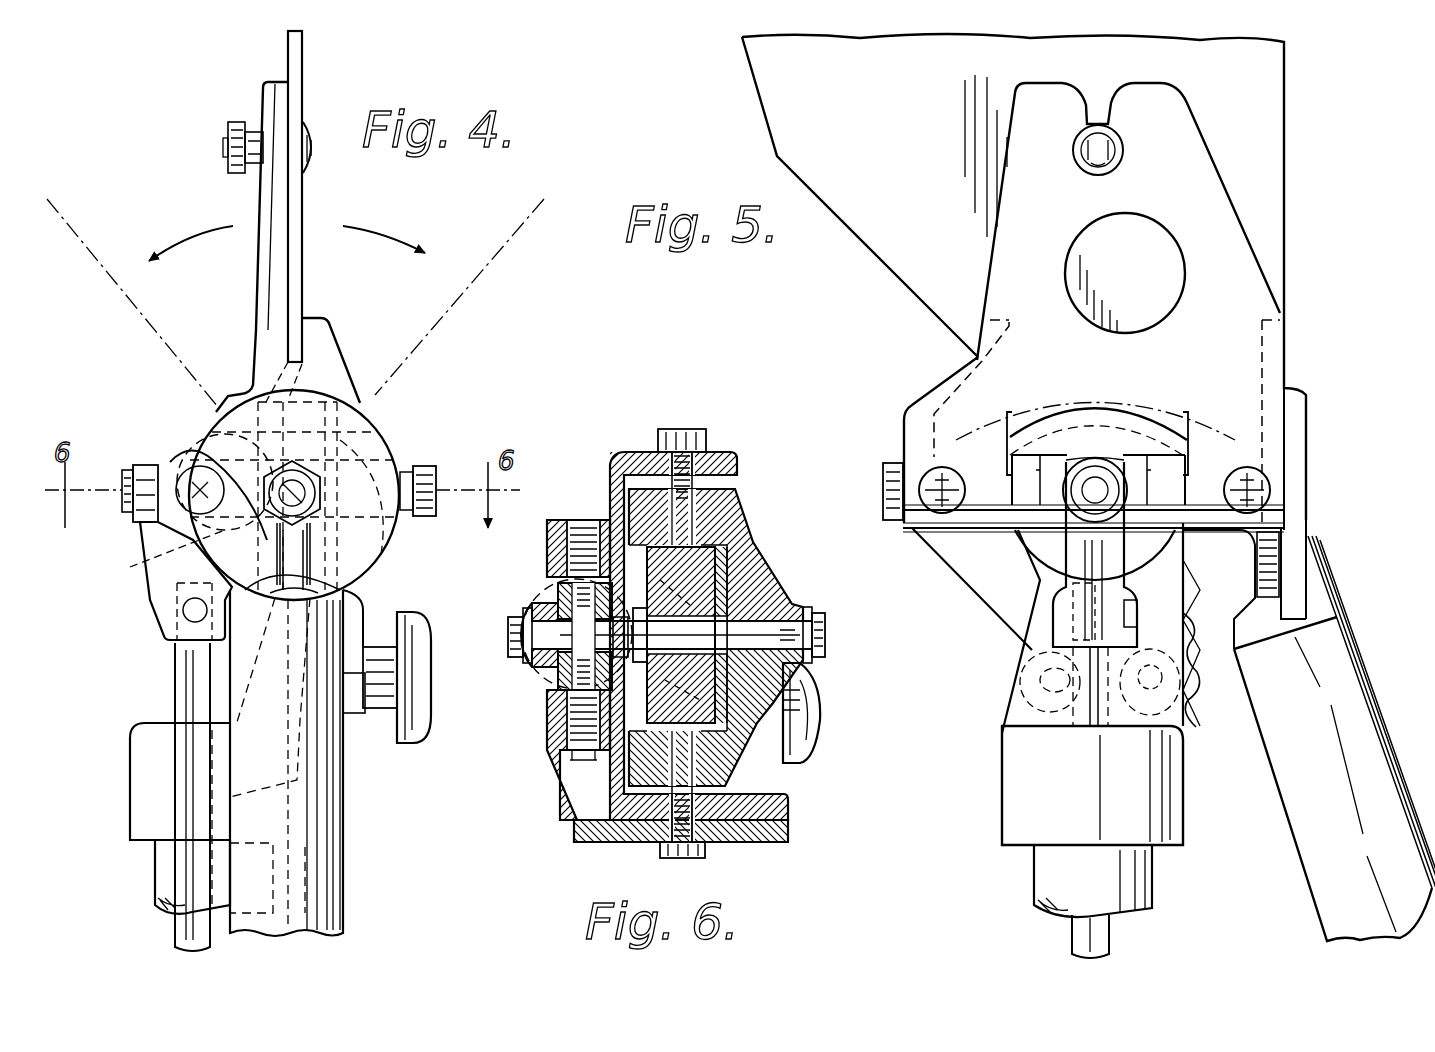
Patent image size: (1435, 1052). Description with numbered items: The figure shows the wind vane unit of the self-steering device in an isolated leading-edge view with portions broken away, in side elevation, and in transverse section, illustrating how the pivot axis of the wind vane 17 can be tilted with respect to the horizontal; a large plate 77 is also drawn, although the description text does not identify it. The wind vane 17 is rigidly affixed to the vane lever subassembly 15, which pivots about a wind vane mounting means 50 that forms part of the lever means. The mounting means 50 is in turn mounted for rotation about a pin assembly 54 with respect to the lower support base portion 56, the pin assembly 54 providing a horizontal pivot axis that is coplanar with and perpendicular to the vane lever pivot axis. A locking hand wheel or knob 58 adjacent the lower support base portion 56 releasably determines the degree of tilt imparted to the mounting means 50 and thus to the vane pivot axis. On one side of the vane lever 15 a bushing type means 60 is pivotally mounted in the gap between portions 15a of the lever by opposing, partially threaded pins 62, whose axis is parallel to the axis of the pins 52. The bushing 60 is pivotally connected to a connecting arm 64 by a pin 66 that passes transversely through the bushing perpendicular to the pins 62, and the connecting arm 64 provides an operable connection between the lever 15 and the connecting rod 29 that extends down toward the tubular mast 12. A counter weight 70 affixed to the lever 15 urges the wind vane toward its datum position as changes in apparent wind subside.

In FIG. 4, the tubular mast 12 is at (158, 880).
In FIG. 5, the tubular mast 12 is at (1155, 878).
In FIG. 4, the vane lever subassembly 15 is at (325, 352).
In FIG. 6, the vane lever subassembly 15 is at (622, 452).
In FIG. 5, the vane lever subassembly 15 is at (935, 393).
In FIG. 6, the portions of the vane lever 15a is at (556, 535).
In FIG. 4, the wind vane 17 is at (288, 46).
In FIG. 4, the connecting rod 29 is at (175, 680).
In FIG. 5, the connecting rod 29 is at (1078, 683).
In FIG. 6, the wind vane mounting means 50 is at (738, 512).
In FIG. 4, the pins 52 is at (310, 478).
In FIG. 6, the pins 52 is at (690, 428).
In FIG. 5, the pins 52 is at (878, 485).
In FIG. 4, the pin assembly 54 is at (440, 480).
In FIG. 6, the pin assembly 54 is at (828, 633).
In FIG. 4, the lower support base portion 56 is at (135, 775).
In FIG. 6, the lower support base portion 56 is at (725, 575).
In FIG. 5, the lower support base portion 56 is at (1005, 780).
In FIG. 4, the locking hand wheel or knob 58 is at (405, 742).
In FIG. 6, the locking hand wheel or knob 58 is at (818, 718).
In FIG. 5, the locking hand wheel or knob 58 is at (1210, 720).
In FIG. 4, the bushing type means 60 is at (210, 420).
In FIG. 6, the bushing type means 60 is at (568, 595).
In FIG. 4, the partially threaded pins 62 is at (150, 548).
In FIG. 6, the partially threaded pins 62 is at (578, 510).
In FIG. 5, the partially threaded pins 62 is at (1042, 450).
In FIG. 4, the connecting arm 64 is at (140, 532).
In FIG. 6, the connecting arm 64 is at (540, 670).
In FIG. 5, the connecting arm 64 is at (1063, 557).
In FIG. 4, the pin 66 is at (124, 472).
In FIG. 6, the pin 66 is at (512, 632).
In FIG. 5, the pin 66 is at (1100, 480).
In FIG. 5, the counter weight 70 is at (1365, 700).
In FIG. 5, the deflector plate 77 is at (1283, 72).